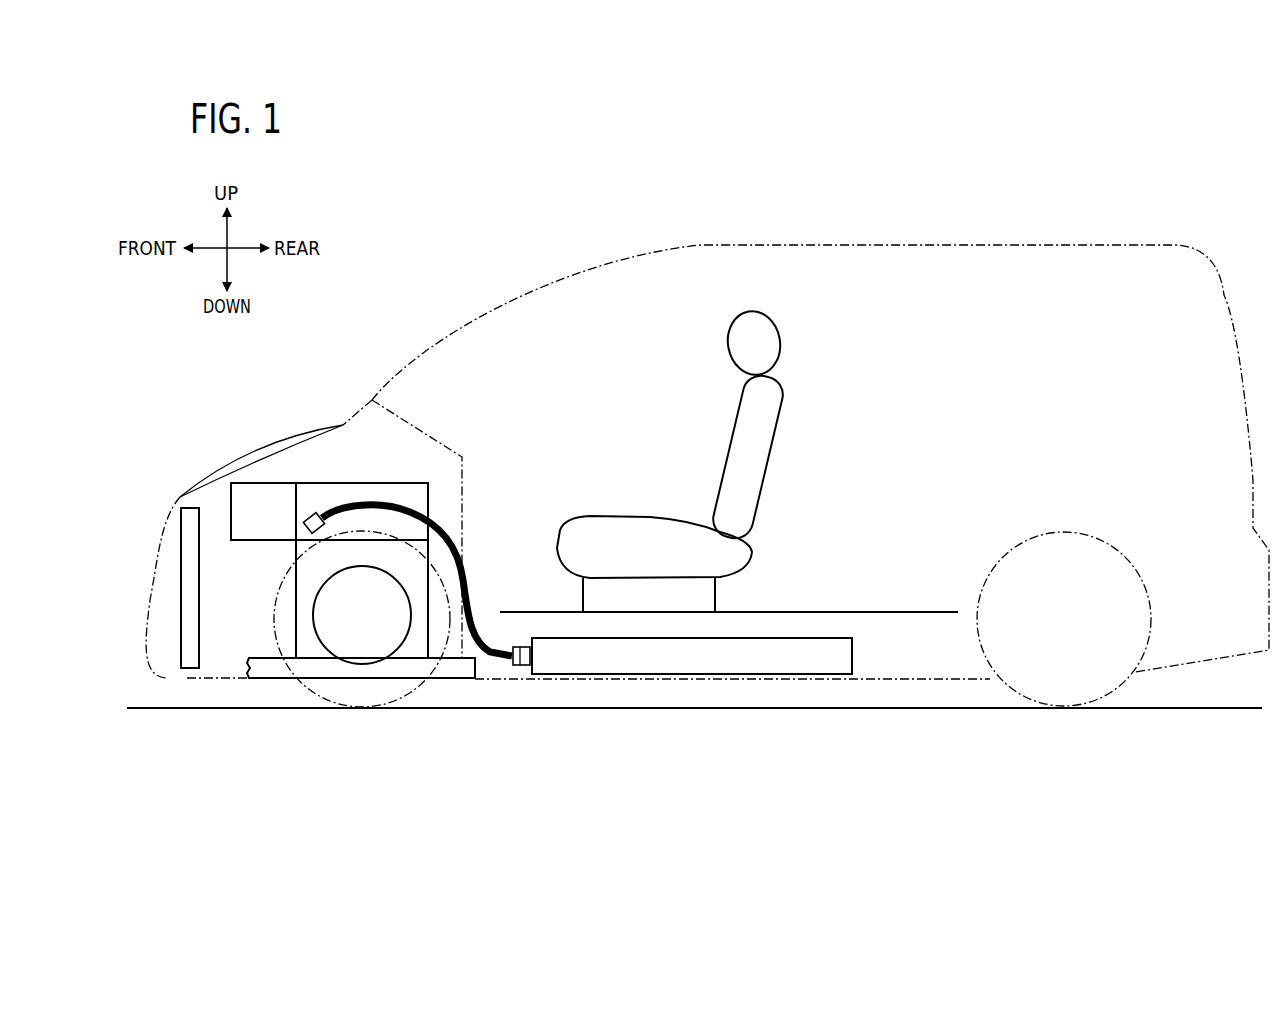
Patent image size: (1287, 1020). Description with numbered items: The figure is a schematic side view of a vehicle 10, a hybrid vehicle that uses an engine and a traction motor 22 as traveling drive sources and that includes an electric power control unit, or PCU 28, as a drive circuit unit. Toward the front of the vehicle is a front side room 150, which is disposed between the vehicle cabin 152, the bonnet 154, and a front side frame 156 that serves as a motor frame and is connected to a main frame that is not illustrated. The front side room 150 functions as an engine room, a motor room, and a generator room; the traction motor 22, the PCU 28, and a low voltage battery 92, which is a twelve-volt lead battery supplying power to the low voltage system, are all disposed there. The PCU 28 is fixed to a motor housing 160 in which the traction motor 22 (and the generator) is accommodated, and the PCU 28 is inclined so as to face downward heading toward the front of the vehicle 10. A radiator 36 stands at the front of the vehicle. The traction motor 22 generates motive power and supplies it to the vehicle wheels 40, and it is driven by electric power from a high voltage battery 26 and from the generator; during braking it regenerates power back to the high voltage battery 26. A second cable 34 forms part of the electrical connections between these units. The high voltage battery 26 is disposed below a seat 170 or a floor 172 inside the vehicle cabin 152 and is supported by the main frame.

The vehicle 10 is at (377, 170).
The vehicle cabin 152 is at (550, 307).
The bonnet 154 is at (300, 432).
The front side frame 156 is at (385, 670).
The front side room 150 is at (224, 552).
The radiator 36 is at (188, 587).
The vehicle wheels 40 is at (302, 686).
The motor housing 160 is at (296, 623).
The low voltage battery 92 is at (263, 482).
The electric power control unit 28 is at (373, 482).
The traction motor 22 is at (323, 600).
The second cable 34 is at (445, 533).
The high voltage battery 26 is at (854, 651).
The floor 172 is at (863, 612).
The seat 170 is at (767, 415).